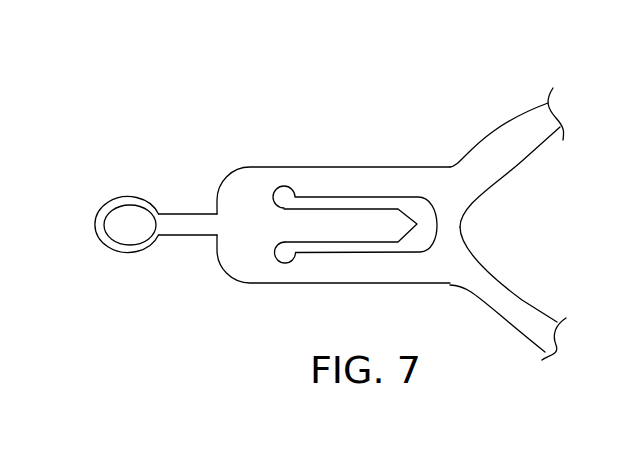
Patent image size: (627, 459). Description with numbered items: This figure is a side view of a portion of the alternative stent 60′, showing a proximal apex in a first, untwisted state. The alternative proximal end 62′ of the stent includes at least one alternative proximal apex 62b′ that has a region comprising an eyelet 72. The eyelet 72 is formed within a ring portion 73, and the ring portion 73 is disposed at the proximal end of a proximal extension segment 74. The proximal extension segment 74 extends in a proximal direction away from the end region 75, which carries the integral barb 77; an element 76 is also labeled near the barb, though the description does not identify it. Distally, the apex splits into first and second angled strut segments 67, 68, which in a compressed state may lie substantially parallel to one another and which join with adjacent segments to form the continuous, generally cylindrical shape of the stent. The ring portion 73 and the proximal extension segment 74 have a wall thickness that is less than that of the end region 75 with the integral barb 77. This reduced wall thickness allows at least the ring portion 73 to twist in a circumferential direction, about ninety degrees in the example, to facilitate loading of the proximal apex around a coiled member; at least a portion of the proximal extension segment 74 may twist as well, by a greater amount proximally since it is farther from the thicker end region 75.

The alternative stent 60′ is at (484, 107).
The alternative proximal end 62′ is at (377, 134).
The alternative proximal apex 62b′ is at (108, 167).
The first angled strut segment 67 is at (528, 323).
The second angled strut segment 68 is at (530, 125).
The eyelet 72 is at (133, 230).
The ring portion 73 is at (103, 240).
The proximal extension segment 74 is at (186, 225).
The end region 75 is at (248, 192).
The slot 76 is at (417, 240).
The integral barb 77 is at (343, 227).